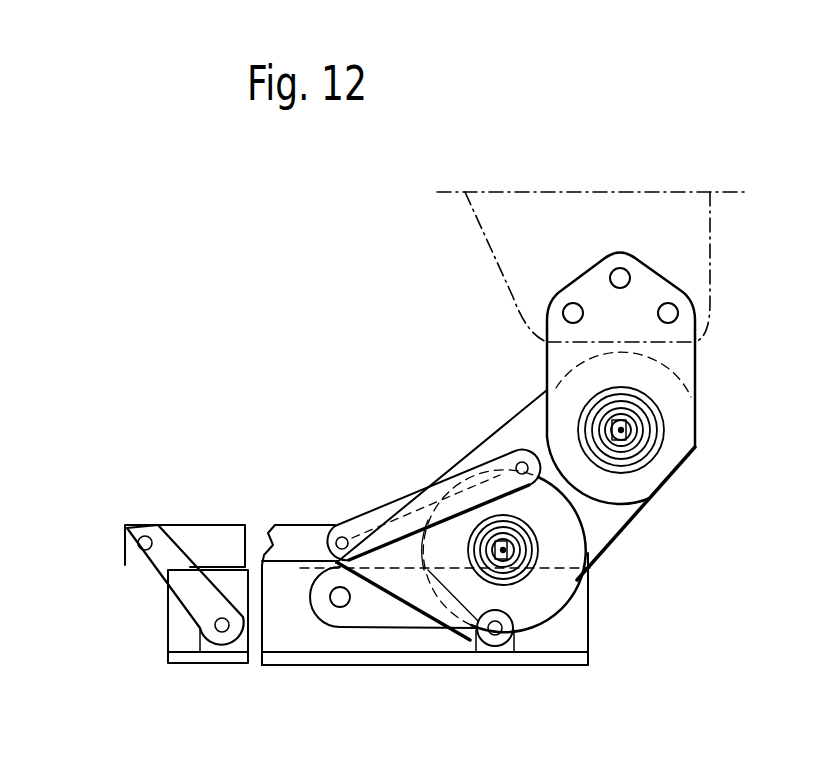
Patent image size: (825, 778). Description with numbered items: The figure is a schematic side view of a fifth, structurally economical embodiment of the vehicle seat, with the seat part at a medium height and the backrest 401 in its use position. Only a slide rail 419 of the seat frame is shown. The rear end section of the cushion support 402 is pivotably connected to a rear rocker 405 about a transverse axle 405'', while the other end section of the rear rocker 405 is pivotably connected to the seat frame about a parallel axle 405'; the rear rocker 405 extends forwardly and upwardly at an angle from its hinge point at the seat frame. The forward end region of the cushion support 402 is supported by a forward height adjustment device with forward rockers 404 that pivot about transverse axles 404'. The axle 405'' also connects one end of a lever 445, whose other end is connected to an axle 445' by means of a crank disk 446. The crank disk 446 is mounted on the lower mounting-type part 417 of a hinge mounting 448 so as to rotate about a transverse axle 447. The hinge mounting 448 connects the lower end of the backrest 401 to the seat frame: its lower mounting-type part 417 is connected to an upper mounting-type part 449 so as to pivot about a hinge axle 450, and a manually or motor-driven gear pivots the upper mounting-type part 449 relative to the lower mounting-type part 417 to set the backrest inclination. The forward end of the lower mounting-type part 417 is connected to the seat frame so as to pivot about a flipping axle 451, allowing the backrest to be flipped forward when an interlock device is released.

The backrest 401 is at (530, 212).
The cushion support 402 is at (287, 537).
The forward rocker 404 is at (168, 588).
The axle 404' is at (177, 593).
The rear rocker 405 is at (412, 635).
The axle 405' is at (513, 663).
The axle 405'' is at (335, 507).
The lower mounting-type part 417 is at (603, 513).
The slide rail 419 is at (567, 632).
The lever 445 is at (433, 505).
The axle 445' is at (481, 443).
The crank disk 446 is at (547, 583).
The axle 447 is at (523, 553).
The hinge mounting 448 is at (703, 392).
The upper mounting-type part 449 is at (697, 343).
The hinge axle 450 is at (637, 445).
The flipping axle 451 is at (341, 607).